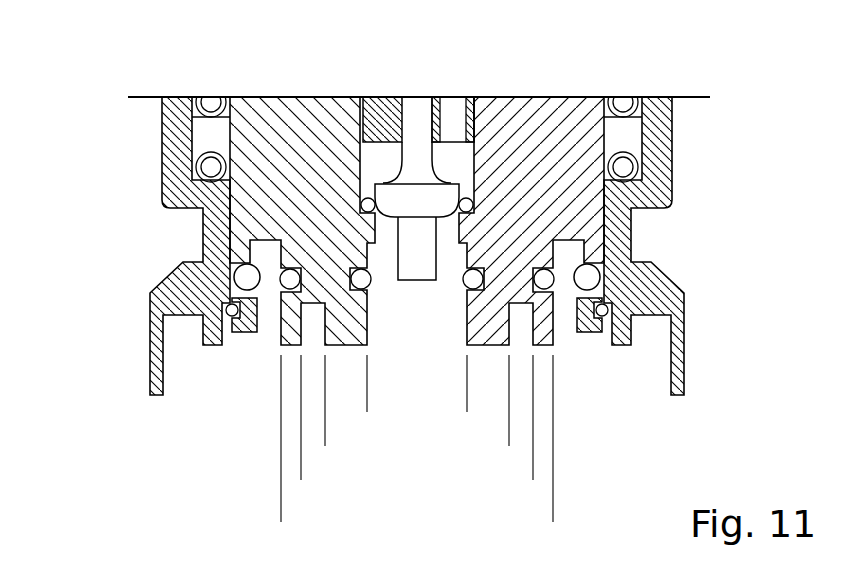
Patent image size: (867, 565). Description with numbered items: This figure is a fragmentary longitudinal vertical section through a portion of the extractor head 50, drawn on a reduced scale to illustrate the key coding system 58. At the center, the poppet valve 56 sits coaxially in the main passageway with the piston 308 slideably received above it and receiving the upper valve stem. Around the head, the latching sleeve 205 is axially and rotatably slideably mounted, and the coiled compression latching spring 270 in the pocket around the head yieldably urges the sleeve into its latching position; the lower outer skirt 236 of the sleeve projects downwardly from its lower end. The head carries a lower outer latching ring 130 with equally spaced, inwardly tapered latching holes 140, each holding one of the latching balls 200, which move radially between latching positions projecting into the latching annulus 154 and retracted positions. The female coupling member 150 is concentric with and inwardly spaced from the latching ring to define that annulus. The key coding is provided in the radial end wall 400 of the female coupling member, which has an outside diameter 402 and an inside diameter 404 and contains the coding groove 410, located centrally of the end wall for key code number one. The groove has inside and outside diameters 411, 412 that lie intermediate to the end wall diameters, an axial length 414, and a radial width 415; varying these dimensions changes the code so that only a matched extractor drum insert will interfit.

The extractor head 50 is at (257, 96).
The piston 308 is at (390, 96).
The poppet valve 56 is at (428, 96).
The latching spring 270 is at (624, 104).
The latching sleeve 205 is at (162, 135).
The latching holes 140 is at (203, 258).
The axial length of coding groove 414 is at (107, 272).
The latching balls 200 is at (592, 270).
The lower outer skirt 236 is at (686, 357).
The outer latching ring 130 is at (595, 332).
The latching annulus 154 is at (567, 323).
The female coupling member 150 is at (467, 308).
The coding groove 410 is at (517, 318).
The end wall 400 is at (285, 345).
The radial width of coding groove 415 is at (358, 388).
The inside diameter of end wall 404 is at (467, 405).
The inside diameter of coding groove 411 is at (533, 439).
The outside diameter of coding groove 412 is at (553, 476).
The outside diameter of end wall 402 is at (553, 515).
The key coding system 58 is at (232, 524).